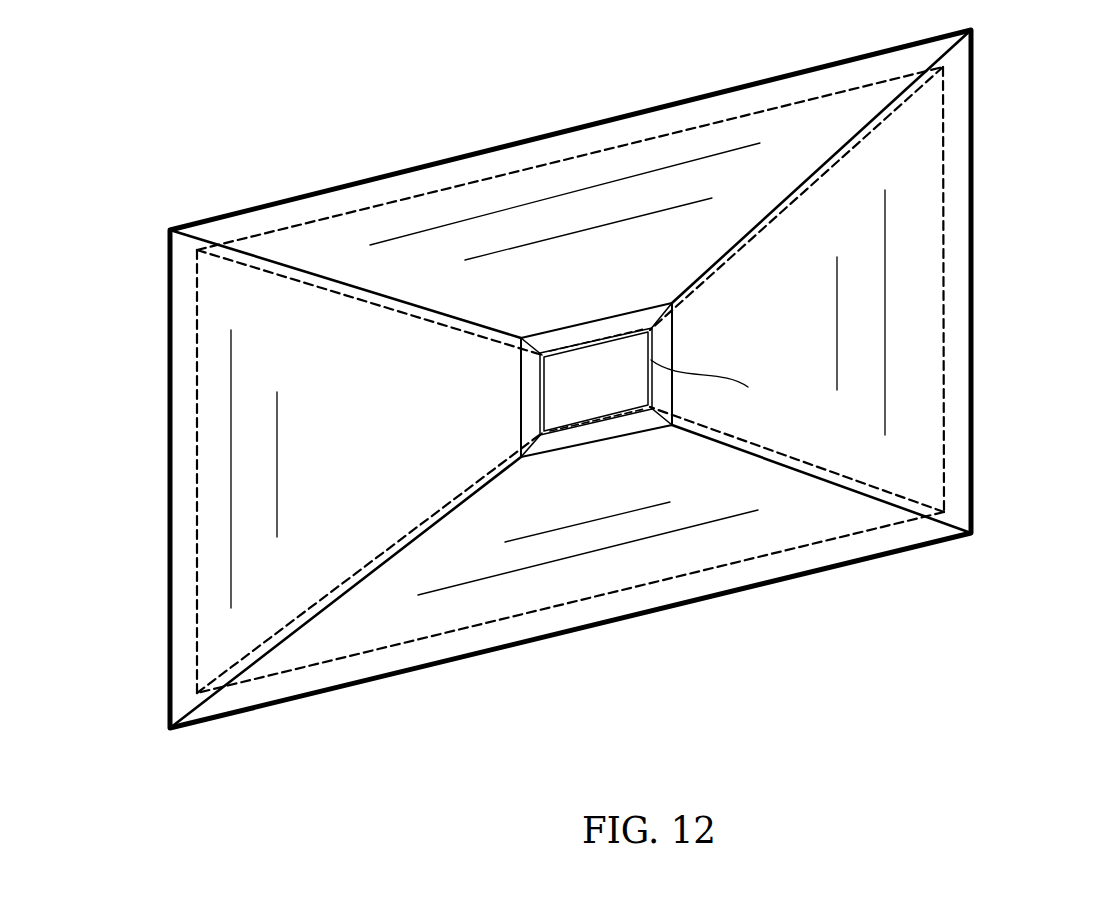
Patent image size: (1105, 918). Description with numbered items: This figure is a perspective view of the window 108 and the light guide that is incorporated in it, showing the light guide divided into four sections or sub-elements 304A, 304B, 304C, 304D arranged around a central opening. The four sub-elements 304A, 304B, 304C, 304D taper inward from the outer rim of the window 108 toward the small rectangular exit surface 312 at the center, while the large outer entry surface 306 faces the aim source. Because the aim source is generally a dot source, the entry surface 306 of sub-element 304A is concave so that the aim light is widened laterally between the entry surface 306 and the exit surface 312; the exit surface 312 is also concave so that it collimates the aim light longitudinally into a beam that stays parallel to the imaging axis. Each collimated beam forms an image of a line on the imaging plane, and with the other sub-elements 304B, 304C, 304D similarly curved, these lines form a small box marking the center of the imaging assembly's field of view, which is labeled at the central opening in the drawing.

The window 108 is at (579, 379).
The entry surface 306 is at (572, 139).
The sub-element 304A is at (377, 222).
The sub-element 304B is at (917, 426).
The sub-element 304C is at (557, 580).
The sub-element 304D is at (213, 500).
The exit surface 312 is at (560, 338).